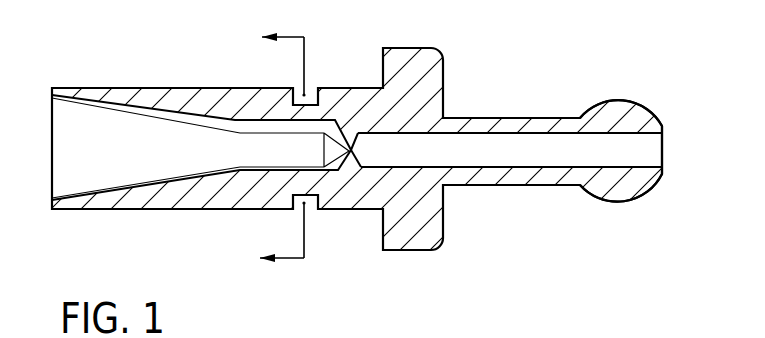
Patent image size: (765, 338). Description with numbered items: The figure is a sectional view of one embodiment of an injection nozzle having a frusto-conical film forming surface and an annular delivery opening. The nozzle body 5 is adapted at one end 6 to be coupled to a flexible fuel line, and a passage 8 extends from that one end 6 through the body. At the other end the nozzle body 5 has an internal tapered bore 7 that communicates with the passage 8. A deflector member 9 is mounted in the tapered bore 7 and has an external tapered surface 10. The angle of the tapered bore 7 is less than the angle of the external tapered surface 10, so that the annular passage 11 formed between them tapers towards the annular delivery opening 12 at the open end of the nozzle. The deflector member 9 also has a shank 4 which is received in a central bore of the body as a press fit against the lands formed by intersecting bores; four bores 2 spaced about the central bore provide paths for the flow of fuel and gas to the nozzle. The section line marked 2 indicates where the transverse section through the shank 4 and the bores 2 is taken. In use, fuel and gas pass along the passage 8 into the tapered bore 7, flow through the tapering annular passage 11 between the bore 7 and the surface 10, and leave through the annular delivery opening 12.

The bores 2 is at (336, 222).
The shank 4 is at (262, 160).
The nozzle body 5 is at (237, 100).
The one end 6 is at (634, 115).
The internal tapered bore 7 is at (193, 113).
The passage 8 is at (547, 148).
The deflector member 9 is at (167, 168).
The external tapered surface 10 is at (213, 173).
The annular passage 11 is at (127, 108).
The annular delivery opening 12 is at (54, 203).